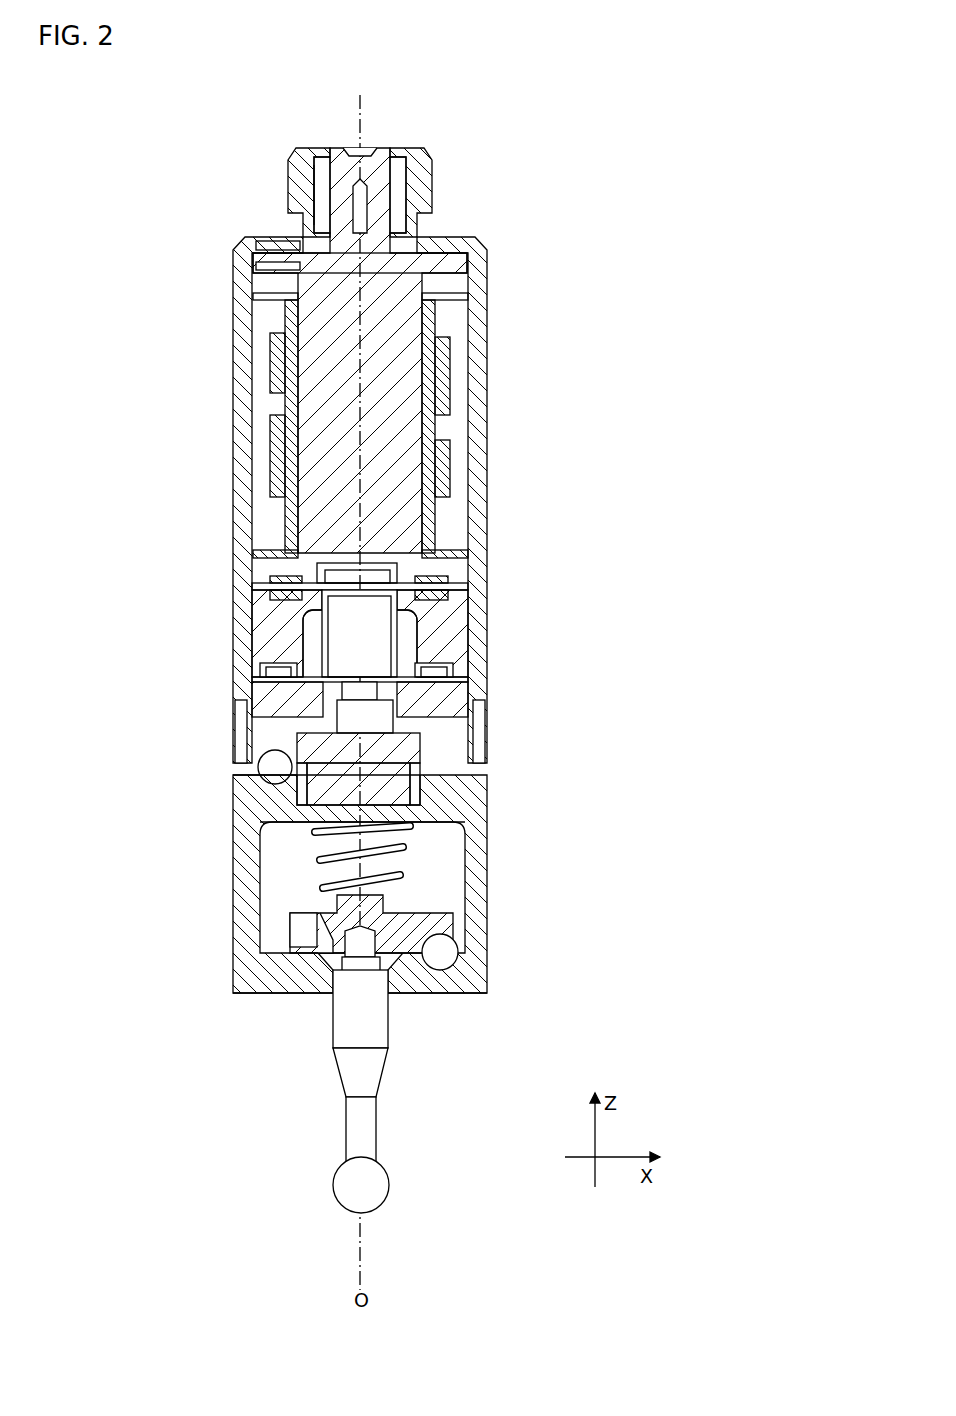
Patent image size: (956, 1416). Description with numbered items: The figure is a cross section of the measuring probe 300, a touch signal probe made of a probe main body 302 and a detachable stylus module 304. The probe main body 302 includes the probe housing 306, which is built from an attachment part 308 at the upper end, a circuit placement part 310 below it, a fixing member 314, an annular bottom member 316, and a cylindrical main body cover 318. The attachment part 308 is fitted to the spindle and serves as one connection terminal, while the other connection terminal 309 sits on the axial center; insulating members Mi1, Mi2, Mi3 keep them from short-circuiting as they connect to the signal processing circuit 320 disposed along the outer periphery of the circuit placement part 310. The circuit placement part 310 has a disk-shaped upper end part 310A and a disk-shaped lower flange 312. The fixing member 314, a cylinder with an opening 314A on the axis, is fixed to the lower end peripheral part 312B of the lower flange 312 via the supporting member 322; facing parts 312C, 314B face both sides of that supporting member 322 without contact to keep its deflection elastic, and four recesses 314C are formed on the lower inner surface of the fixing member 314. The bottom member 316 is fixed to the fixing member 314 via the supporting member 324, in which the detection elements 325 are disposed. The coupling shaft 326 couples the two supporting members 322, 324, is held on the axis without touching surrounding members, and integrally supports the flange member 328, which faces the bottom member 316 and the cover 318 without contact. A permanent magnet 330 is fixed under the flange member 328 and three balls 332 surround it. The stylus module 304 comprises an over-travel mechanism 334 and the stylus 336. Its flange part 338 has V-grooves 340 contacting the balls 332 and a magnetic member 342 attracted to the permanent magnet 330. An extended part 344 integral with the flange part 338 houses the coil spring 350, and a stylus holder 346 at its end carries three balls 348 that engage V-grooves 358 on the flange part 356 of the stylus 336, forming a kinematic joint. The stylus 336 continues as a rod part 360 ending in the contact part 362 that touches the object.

The measuring probe 300 is at (565, 160).
The probe main body 302 is at (550, 377).
The stylus module 304 is at (620, 1003).
The probe housing 306 is at (525, 345).
The attachment part 308 is at (432, 172).
The connection terminal 309 is at (367, 162).
The circuit placement part 310 is at (395, 322).
The upper end part 310A is at (455, 275).
The lower flange 312 is at (395, 568).
The lower end peripheral part 312B is at (263, 583).
The facing part 312C is at (293, 545).
The fixing member 314 is at (420, 600).
The opening 314A is at (307, 613).
The facing part 314B is at (297, 580).
The recess 314C is at (258, 663).
The bottom member 316 is at (440, 705).
The main body cover 318 is at (485, 405).
The signal processing circuit 320 is at (433, 338).
The supporting member 322 is at (430, 586).
The supporting member 324 is at (430, 680).
The detection element 325 is at (263, 668).
The coupling shaft 326 is at (385, 612).
The flange member 328 is at (267, 737).
The permanent magnet 330 is at (380, 735).
The ball 332 is at (274, 769).
The over-travel mechanism 334 is at (500, 870).
The stylus 336 is at (435, 1100).
The flange part 338 is at (285, 808).
The V-groove 340 is at (258, 788).
The magnetic member 342 is at (420, 790).
The extended part 344 is at (255, 860).
The stylus holder 346 is at (470, 985).
The ball 348 is at (455, 970).
The coil spring 350 is at (330, 883).
The flange part 356 is at (445, 920).
The V-groove 358 is at (440, 952).
The rod part 360 is at (372, 1148).
The contact part 362 is at (372, 1192).
The insulating member Mi1 is at (320, 178).
The insulating member Mi2 is at (280, 250).
The insulating member Mi3 is at (250, 244).